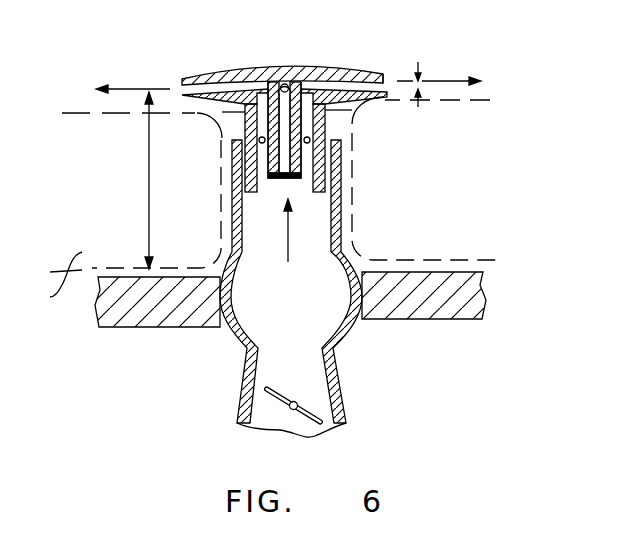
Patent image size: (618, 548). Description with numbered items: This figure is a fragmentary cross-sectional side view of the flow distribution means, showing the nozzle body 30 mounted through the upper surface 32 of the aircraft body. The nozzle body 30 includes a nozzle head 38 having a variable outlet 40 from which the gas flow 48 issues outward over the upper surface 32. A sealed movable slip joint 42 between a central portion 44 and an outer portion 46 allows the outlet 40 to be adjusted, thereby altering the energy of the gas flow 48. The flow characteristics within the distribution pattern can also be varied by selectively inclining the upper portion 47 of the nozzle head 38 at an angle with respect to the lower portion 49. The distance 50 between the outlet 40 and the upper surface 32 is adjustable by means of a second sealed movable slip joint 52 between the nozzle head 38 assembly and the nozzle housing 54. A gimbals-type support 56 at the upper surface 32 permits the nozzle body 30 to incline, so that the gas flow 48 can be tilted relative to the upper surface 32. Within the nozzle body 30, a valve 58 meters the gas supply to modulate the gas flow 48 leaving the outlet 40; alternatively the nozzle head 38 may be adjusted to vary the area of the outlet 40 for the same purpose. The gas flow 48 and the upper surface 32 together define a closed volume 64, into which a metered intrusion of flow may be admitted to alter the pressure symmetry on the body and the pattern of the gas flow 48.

The nozzle body 30 is at (302, 56).
The upper surface 32 is at (424, 271).
The nozzle head 38 is at (350, 72).
The variable outlet 40 is at (421, 81).
The sealed movable slip joint 42 is at (310, 142).
The central portion 44 is at (295, 174).
The outer portion 46 is at (219, 131).
The upper portion of the nozzle head 47 is at (385, 73).
The gas flow 48 is at (134, 88).
The lower portion of the nozzle head 49 is at (386, 98).
The distance 50 is at (148, 210).
The sealed movable slip joint 52 is at (245, 180).
The nozzle housing 54 is at (232, 232).
The gimbals-type support 56 is at (171, 305).
The valve 58 is at (310, 411).
The closed volume 64 is at (48, 279).